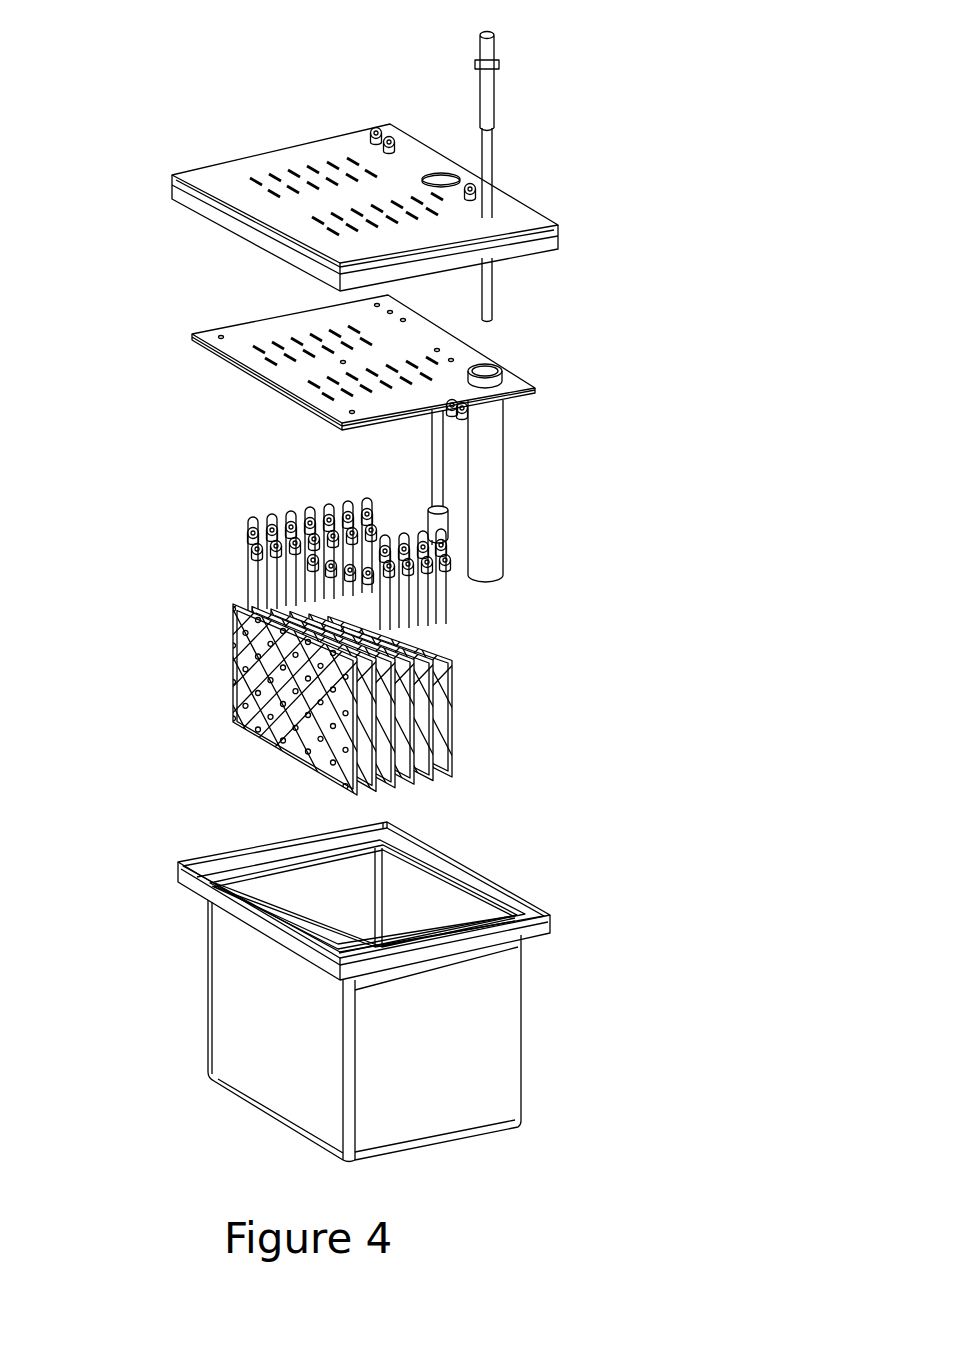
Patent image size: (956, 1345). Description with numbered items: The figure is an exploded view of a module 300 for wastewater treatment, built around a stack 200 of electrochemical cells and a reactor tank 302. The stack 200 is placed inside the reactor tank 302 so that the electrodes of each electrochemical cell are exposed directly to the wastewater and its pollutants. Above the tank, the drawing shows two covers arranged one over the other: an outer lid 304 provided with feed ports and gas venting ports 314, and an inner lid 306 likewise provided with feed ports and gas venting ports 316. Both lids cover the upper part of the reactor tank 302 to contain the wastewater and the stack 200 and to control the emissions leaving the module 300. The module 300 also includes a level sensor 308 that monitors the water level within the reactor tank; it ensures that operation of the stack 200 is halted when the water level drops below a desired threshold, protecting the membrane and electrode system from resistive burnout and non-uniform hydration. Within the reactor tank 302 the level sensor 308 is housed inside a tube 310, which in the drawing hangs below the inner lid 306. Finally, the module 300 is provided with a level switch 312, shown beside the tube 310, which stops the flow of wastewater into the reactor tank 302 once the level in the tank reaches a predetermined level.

The module 300 is at (579, 87).
The reactor tank 302 is at (488, 875).
The outer lid 304 is at (332, 156).
The inner lid 306 is at (517, 380).
The level sensor 308 is at (482, 154).
The tube 310 is at (497, 476).
The level switch 312 is at (447, 530).
The gas venting ports 314 is at (338, 168).
The gas venting ports 316 is at (349, 343).
The stack 200 is at (194, 563).